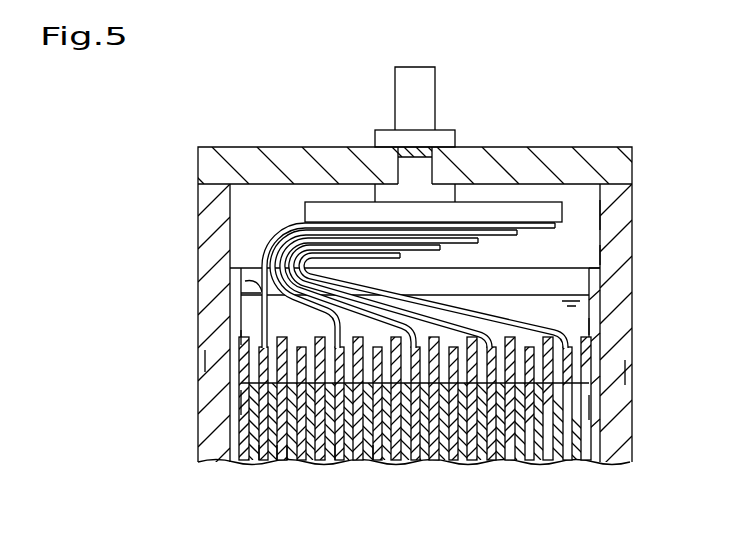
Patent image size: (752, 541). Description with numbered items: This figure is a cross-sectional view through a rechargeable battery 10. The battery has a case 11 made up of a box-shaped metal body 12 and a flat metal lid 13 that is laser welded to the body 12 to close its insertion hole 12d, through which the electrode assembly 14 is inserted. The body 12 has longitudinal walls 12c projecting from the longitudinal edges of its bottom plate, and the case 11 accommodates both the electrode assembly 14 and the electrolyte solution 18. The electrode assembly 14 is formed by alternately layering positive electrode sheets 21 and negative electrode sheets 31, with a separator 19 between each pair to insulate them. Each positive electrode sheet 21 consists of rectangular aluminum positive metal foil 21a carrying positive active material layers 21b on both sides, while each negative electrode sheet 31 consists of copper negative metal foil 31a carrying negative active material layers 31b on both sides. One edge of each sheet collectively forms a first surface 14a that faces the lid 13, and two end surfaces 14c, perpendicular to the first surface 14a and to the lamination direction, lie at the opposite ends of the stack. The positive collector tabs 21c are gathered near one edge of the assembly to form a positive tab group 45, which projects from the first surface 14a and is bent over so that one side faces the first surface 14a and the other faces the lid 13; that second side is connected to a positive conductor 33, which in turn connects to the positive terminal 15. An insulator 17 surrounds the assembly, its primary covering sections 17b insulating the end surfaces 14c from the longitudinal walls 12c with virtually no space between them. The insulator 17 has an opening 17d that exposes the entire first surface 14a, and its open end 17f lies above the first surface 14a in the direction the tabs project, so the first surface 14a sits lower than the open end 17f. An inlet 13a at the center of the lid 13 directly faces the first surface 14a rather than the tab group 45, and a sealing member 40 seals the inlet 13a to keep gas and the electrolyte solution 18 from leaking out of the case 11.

The rechargeable battery 10 is at (641, 128).
The case 11 is at (376, 313).
The body 12 is at (198, 196).
The longitudinal walls 12c is at (215, 360).
The insertion hole 12d is at (596, 217).
The lid 13 is at (198, 166).
The inlet 13a is at (401, 180).
The electrode assembly 14 is at (575, 326).
The first surface 14a is at (593, 330).
The end surfaces 14c is at (255, 383).
The positive terminal 15 is at (436, 96).
The insulator 17 is at (236, 420).
The primary covering sections 17b is at (236, 448).
The opening 17d is at (590, 272).
The open end 17f is at (600, 253).
The electrolyte solution 18 is at (245, 280).
The separator 19 is at (470, 462).
The positive electrode sheets 21 is at (245, 462).
The positive metal foil 21a is at (270, 462).
The positive active material layers 21b is at (257, 462).
The positive collector tabs 21c is at (243, 335).
The negative electrode sheets 31 is at (313, 462).
The negative metal foil 31a is at (335, 462).
The negative active material layers 31b is at (373, 462).
The positive conductor 33 is at (533, 204).
The sealing member 40 is at (410, 152).
The positive tab group 45 is at (275, 246).